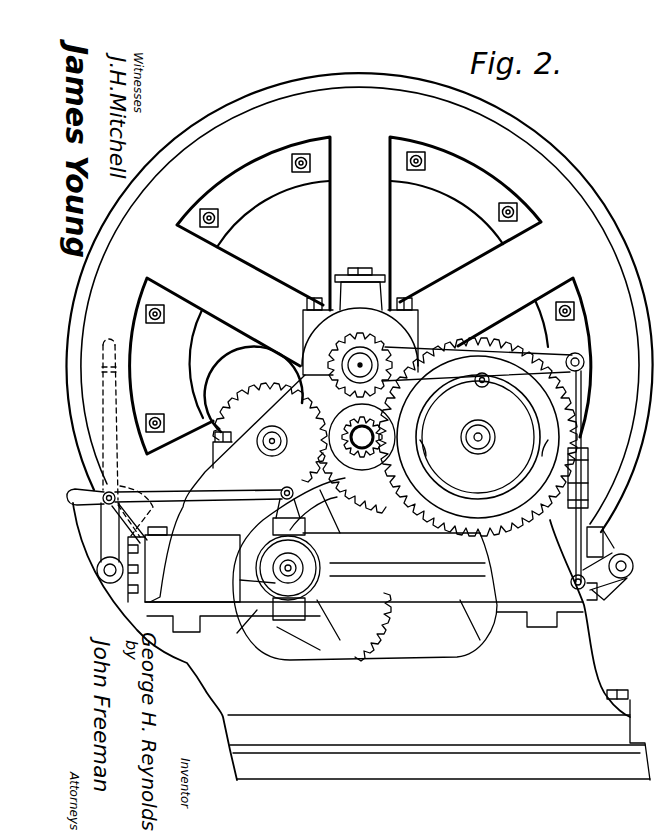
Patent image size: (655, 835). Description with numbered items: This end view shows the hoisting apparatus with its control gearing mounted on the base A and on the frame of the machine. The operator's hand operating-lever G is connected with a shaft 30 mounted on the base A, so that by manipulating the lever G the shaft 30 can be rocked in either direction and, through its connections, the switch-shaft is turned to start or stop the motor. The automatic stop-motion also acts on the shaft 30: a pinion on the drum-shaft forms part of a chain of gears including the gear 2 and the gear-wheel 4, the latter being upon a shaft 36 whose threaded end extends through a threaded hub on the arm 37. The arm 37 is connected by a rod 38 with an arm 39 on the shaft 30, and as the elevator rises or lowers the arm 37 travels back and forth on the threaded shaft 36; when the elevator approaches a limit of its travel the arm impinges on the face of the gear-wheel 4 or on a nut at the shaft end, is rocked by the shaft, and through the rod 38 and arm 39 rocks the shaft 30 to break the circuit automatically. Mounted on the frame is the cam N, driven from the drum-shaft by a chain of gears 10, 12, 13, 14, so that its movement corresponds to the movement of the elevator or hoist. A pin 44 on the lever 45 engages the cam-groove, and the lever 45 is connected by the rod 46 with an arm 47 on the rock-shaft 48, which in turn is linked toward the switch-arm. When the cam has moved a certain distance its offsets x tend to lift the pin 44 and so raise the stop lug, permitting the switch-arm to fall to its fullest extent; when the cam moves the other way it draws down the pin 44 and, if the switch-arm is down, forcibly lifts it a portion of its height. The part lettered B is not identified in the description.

The gear 2 is at (239, 396).
The gear-wheel 4 is at (390, 620).
The gear 10 is at (369, 345).
The gear 12 is at (338, 425).
The gear 13 is at (325, 464).
The gear 14 is at (507, 536).
The shaft 30 is at (105, 573).
The shaft 36 is at (297, 567).
The arm 37 is at (278, 528).
The rod 38 is at (230, 497).
The arm 39 is at (100, 538).
The pin 44 is at (537, 364).
The lever 45 is at (477, 367).
The rod 46 is at (584, 434).
The arm 47 is at (602, 598).
The rock-shaft 48 is at (624, 563).
The base A is at (361, 577).
The bearing hub B is at (360, 299).
The hand operating-lever G is at (97, 452).
The cam N is at (443, 498).
The offsets x is at (481, 451).